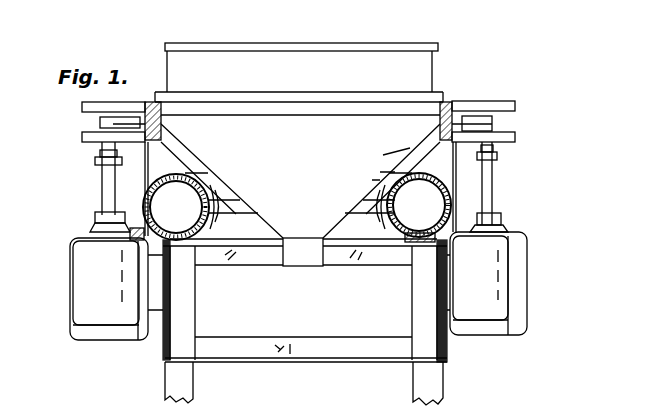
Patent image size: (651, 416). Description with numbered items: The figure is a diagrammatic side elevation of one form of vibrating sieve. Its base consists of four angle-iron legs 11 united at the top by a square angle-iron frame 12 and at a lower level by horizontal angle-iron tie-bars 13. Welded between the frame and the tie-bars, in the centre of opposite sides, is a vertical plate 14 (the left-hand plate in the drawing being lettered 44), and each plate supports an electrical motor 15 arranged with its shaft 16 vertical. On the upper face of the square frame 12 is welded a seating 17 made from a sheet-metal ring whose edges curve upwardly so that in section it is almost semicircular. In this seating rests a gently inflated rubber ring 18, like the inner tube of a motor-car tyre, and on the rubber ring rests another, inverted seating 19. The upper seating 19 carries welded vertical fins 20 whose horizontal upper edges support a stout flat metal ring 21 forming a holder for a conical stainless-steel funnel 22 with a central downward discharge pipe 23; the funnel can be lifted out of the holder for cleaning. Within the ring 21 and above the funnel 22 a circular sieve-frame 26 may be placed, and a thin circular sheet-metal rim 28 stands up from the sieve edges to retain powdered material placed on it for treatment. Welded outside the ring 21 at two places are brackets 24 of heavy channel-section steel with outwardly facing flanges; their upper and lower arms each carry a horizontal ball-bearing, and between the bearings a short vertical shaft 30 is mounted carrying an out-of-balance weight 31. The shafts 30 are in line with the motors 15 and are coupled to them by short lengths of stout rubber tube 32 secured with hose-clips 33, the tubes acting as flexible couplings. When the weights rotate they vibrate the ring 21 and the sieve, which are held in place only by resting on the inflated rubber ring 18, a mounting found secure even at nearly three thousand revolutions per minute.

The angle-iron legs 11 is at (185, 385).
The square angle-iron frame 12 is at (358, 258).
The horizontal angle-iron tie-bars 13 is at (330, 348).
The vertical plate 14 is at (447, 348).
The side plate 44 is at (162, 343).
The electrical motor 15 is at (80, 300).
The shaft 16 is at (90, 232).
The seating 17 is at (232, 246).
The rubber ring 18 is at (369, 197).
The upper seating 19 is at (384, 163).
The vertical fins 20 is at (148, 173).
The flat metal ring 21 is at (155, 120).
The stainless-steel funnel 22 is at (455, 104).
The discharge pipe 23 is at (292, 258).
The brackets 24 is at (92, 105).
The circular sieve-frame 26 is at (443, 98).
The sheet-metal rim 28 is at (432, 70).
The vertical shaft 30 is at (95, 153).
The out-of-balance weight 31 is at (113, 124).
The rubber tube 32 is at (98, 222).
The hose-clips 33 is at (105, 168).